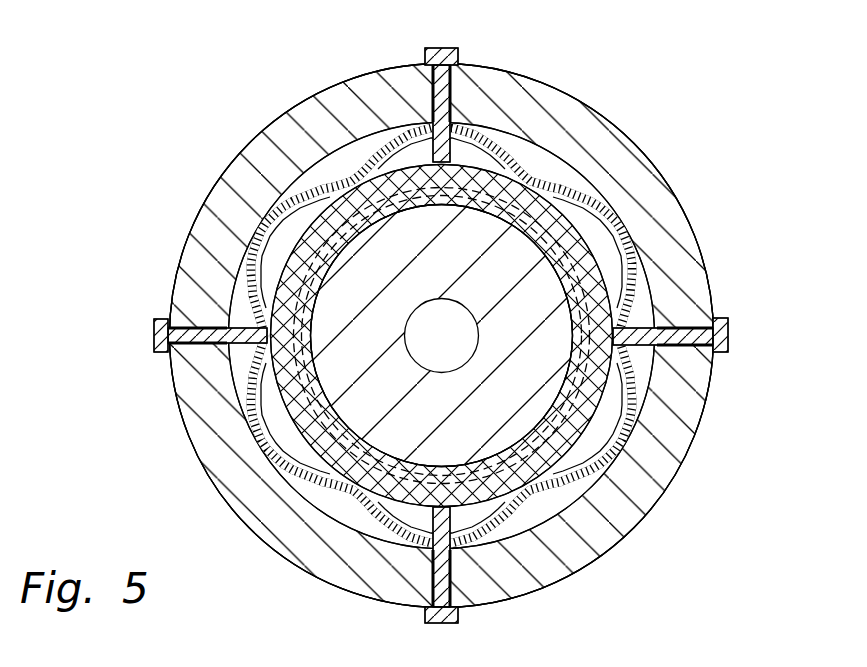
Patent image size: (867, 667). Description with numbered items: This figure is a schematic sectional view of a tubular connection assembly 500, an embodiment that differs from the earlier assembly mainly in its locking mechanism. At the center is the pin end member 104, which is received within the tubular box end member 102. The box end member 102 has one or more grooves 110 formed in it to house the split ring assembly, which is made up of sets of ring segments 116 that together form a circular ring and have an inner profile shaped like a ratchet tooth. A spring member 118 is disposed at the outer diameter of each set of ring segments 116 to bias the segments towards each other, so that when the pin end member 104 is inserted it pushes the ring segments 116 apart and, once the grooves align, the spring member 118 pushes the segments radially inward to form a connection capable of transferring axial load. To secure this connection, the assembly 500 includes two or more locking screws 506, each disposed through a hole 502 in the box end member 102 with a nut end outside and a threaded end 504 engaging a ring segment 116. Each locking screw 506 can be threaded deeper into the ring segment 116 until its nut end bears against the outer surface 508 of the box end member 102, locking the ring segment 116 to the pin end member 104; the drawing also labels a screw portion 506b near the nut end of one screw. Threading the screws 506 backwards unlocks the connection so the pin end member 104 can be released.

The tubular connection assembly 500 is at (182, 108).
The box end member 102 is at (640, 151).
The pin end member 104 is at (339, 373).
The groove 110 is at (645, 284).
The ring segment 116 is at (418, 176).
The spring member 118 is at (245, 282).
The hole 502 is at (168, 352).
The threaded end 504 is at (597, 392).
The locking screw 506 is at (458, 50).
The set screw head 506b is at (729, 350).
The outer surface 508 is at (628, 528).